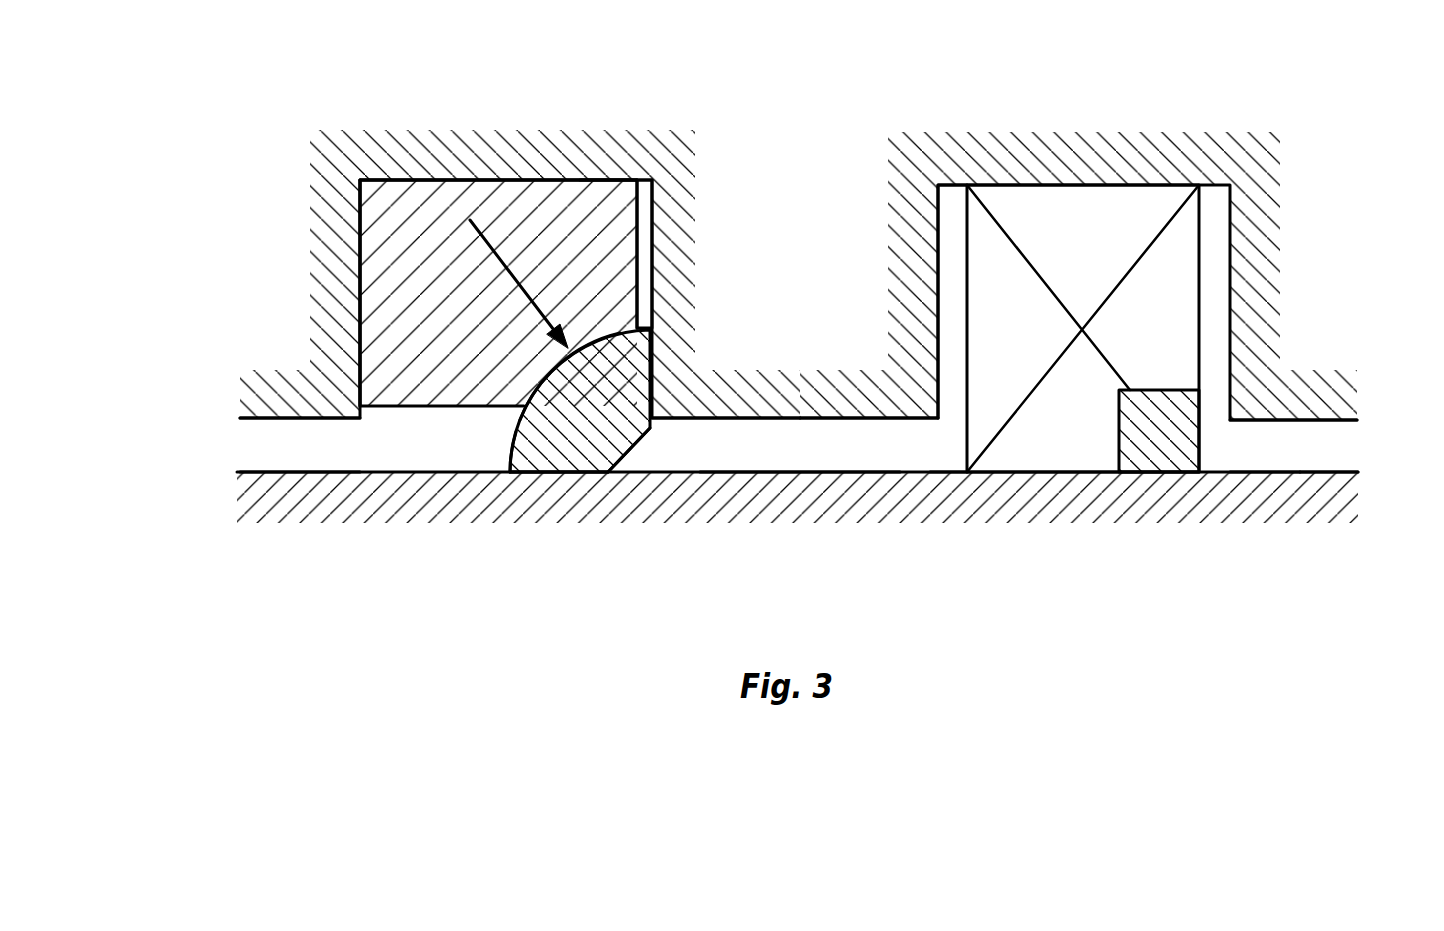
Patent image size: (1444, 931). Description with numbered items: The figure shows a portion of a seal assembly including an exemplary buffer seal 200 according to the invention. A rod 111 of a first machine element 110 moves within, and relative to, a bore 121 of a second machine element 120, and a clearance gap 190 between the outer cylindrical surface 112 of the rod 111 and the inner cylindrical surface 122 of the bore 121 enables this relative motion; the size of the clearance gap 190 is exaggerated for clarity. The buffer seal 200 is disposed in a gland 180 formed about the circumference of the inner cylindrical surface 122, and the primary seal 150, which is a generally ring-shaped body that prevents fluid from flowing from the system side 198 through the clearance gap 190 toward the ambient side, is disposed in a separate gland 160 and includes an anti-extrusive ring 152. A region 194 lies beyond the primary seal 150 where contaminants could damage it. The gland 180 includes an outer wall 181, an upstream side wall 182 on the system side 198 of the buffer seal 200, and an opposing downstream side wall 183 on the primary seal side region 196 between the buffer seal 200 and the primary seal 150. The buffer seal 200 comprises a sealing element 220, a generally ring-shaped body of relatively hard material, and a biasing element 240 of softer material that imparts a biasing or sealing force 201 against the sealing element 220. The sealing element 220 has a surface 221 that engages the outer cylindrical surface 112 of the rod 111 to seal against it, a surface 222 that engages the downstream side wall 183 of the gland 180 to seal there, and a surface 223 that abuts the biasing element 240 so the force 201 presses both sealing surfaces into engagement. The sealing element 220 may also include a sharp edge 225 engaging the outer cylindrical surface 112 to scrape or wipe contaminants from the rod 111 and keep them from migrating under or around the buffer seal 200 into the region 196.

The first machine element 110 is at (1062, 498).
The rod 111 is at (1335, 471).
The outer cylindrical surface 112 is at (899, 472).
The second machine element 120 is at (1252, 237).
The bore 121 is at (1300, 420).
The inner cylindrical surface 122 is at (900, 418).
The primary seal 150 is at (1088, 220).
The anti-extrusive ring 152 is at (1158, 450).
The gland 160 is at (938, 220).
The gland 180 is at (650, 207).
The outer wall 181 is at (607, 180).
The side wall 182 is at (365, 266).
The opposing side wall 183 is at (652, 252).
The clearance gap 190 is at (272, 447).
The region 194 is at (1293, 445).
The primary seal side region 196 is at (798, 448).
The system side 198 is at (335, 448).
The buffer seal 200 is at (527, 178).
The sealing force 201 is at (493, 263).
The sealing element 220 is at (620, 378).
The surface 221 is at (552, 475).
The surface 222 is at (650, 425).
The surface 223 is at (540, 378).
The sharp edge 225 is at (512, 463).
The biasing element 240 is at (441, 220).